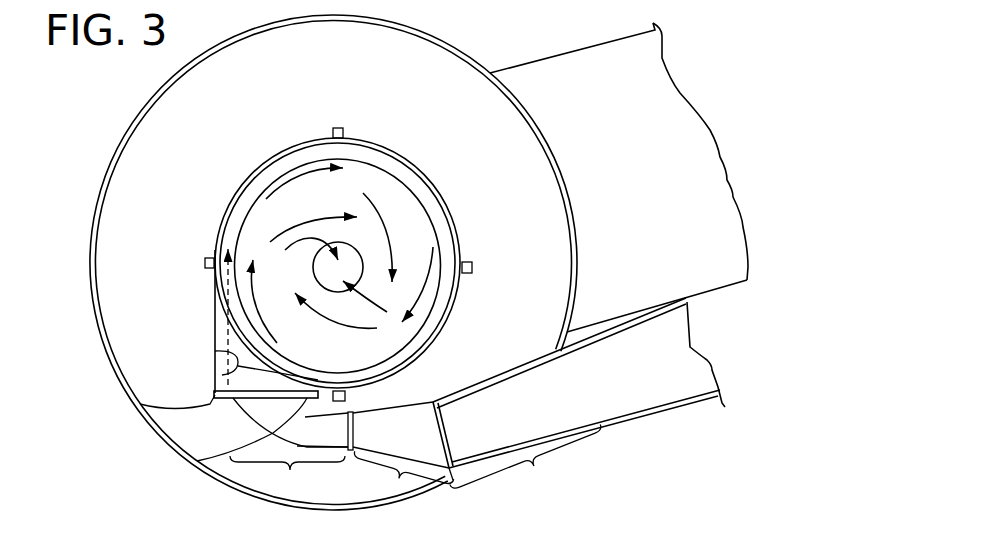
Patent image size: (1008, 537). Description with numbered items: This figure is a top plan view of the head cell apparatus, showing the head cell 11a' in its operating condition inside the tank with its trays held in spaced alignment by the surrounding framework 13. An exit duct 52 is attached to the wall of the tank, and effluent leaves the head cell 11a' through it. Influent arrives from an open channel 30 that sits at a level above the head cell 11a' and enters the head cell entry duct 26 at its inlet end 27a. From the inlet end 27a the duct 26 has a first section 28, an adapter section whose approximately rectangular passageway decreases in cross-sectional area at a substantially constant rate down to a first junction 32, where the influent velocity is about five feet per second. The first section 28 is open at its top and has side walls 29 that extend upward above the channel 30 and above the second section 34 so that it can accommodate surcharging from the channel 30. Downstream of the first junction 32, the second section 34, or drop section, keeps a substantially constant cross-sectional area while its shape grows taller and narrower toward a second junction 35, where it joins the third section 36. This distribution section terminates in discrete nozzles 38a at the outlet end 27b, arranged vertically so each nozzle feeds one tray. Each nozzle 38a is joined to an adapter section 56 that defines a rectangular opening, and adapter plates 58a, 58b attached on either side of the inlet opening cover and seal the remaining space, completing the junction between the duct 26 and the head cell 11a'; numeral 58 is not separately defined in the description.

The head cell 11a' is at (336, 248).
The framework 13 is at (340, 128).
The exit duct 52 is at (653, 176).
The outlet end 27b is at (213, 305).
The adapter section 56 is at (217, 349).
The adapter plate 58a is at (140, 405).
The adapter plate 58b is at (200, 461).
The guide wall 58 is at (372, 436).
The nozzle 38a is at (266, 414).
The head cell entry duct 26 is at (400, 405).
The third section 36 is at (287, 477).
The second section 34 is at (402, 475).
The second junction 35 is at (350, 458).
The first junction 32 is at (453, 483).
The first section 28 is at (528, 469).
The side walls 29 is at (470, 455).
The open channel 30 is at (672, 409).
The inlet end 27a is at (579, 402).